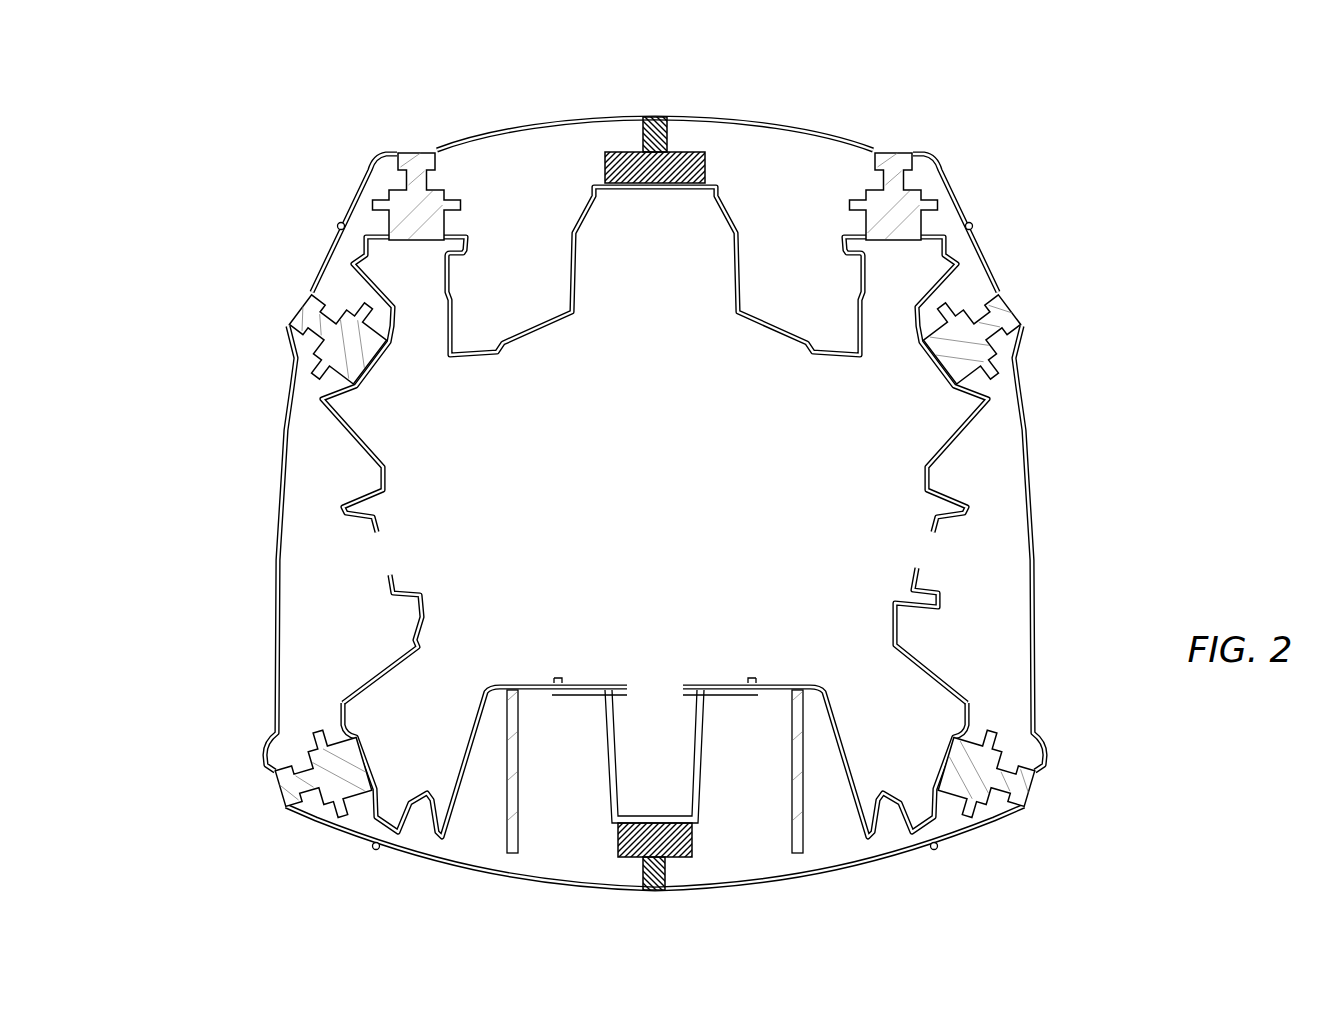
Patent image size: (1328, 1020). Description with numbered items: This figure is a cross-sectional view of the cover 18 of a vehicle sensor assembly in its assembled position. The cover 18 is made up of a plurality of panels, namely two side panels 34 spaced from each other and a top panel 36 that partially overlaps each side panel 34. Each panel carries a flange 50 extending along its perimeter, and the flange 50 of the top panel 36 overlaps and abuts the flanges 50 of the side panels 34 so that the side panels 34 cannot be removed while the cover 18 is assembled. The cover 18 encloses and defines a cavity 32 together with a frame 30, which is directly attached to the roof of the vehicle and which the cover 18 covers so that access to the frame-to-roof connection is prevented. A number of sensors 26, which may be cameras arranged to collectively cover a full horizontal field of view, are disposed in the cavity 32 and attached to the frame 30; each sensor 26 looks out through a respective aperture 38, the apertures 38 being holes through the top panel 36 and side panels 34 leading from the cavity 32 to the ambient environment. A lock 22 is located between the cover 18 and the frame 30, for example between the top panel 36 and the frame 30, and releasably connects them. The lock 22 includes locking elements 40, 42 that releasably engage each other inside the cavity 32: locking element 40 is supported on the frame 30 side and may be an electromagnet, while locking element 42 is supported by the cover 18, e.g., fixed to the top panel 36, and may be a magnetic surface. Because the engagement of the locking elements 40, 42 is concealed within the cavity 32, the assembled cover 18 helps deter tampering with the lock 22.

The cover 18 is at (663, 483).
The lock 22 is at (689, 498).
The sensors 26 is at (411, 242).
The frame 30 is at (773, 332).
The cavity 32 is at (322, 600).
The side panels 34 is at (283, 492).
The top panel 36 is at (813, 128).
The apertures 38 is at (408, 143).
The locking element 40 is at (663, 132).
The locking element 42 is at (707, 167).
The flange 50 is at (342, 226).